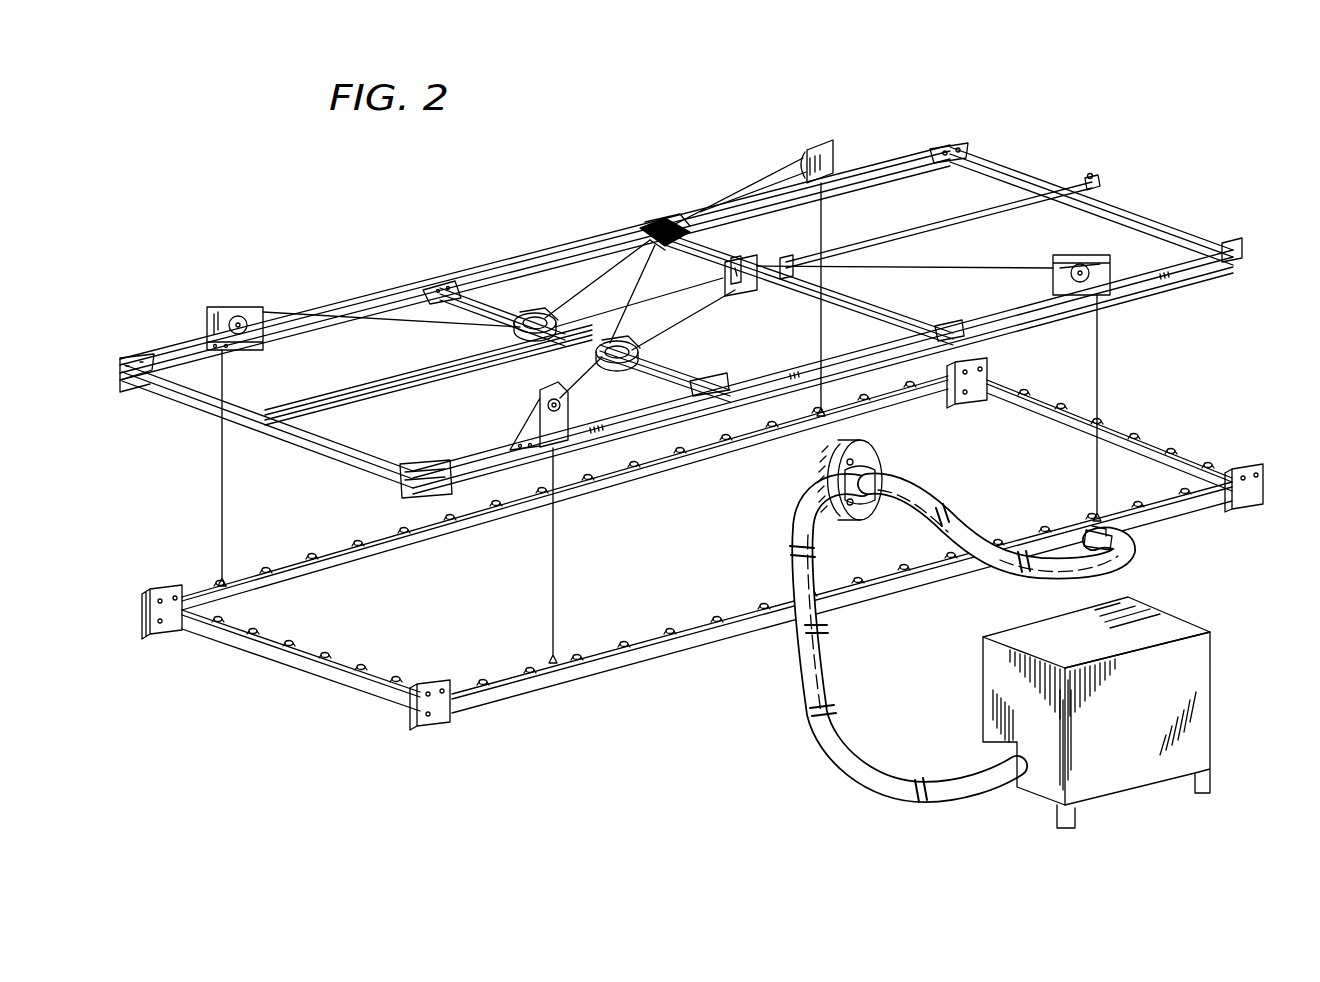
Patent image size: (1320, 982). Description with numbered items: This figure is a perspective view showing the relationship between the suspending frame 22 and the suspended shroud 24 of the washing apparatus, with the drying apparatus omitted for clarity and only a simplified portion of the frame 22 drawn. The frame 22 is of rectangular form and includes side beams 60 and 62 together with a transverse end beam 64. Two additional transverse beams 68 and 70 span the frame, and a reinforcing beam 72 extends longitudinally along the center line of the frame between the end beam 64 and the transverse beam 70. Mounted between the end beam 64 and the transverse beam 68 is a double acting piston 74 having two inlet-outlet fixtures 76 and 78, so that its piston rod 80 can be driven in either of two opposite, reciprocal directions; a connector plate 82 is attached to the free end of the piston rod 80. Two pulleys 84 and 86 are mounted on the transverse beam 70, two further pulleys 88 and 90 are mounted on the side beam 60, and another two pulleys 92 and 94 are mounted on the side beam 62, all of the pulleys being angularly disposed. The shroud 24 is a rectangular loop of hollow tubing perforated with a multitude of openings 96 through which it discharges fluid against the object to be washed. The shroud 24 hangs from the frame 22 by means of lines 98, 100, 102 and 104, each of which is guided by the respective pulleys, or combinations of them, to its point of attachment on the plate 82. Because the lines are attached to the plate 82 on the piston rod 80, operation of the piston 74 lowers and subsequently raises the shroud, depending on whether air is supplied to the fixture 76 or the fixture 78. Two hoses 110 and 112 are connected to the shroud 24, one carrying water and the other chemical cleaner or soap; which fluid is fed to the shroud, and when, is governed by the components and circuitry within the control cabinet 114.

The suspending frame 22 is at (681, 307).
The suspended shroud 24 is at (702, 541).
The side beam 60 is at (600, 238).
The side beam 62 is at (786, 365).
The transverse end beam 64 is at (318, 452).
The transverse beam 68 is at (847, 292).
The transverse beam 70 is at (656, 384).
The reinforcing beam 72 is at (378, 397).
The double acting piston 74 is at (932, 219).
The inlet-outlet fixture 76 is at (800, 228).
The inlet-outlet fixture 78 is at (1078, 175).
The piston rod 80 is at (762, 290).
The connector plate 82 is at (750, 249).
The pulley 84 is at (530, 318).
The pulley 86 is at (607, 366).
The pulley 88 is at (800, 151).
The pulley 90 is at (228, 308).
The pulley 92 is at (1088, 256).
The pulley 94 is at (564, 400).
The openings 96 is at (1037, 398).
The line 98 is at (1098, 383).
The line 100 is at (556, 580).
The line 102 is at (221, 493).
The line 104 is at (828, 215).
The hose 110 is at (812, 526).
The hose 112 is at (828, 528).
The control cabinet 114 is at (1205, 722).